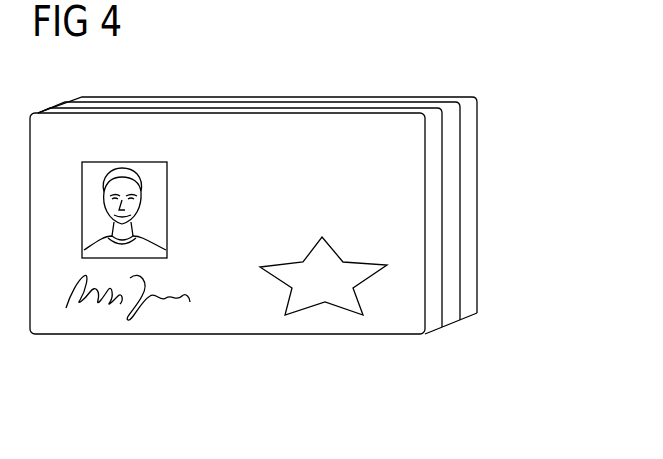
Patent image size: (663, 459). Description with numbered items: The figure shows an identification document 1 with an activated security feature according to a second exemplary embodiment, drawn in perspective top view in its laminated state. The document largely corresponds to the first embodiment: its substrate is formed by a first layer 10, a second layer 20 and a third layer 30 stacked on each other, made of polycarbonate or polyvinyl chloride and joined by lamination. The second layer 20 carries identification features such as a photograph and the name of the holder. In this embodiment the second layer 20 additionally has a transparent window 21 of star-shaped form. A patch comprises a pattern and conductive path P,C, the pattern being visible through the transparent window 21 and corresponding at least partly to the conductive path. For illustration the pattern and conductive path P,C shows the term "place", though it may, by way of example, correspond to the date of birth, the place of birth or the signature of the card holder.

The identification document 1 is at (299, 210).
The first layer 10 is at (448, 252).
The second layer 20 is at (432, 302).
The third layer 30 is at (467, 200).
The transparent window 21 is at (302, 314).
The pattern and conductive path P,C is at (337, 292).